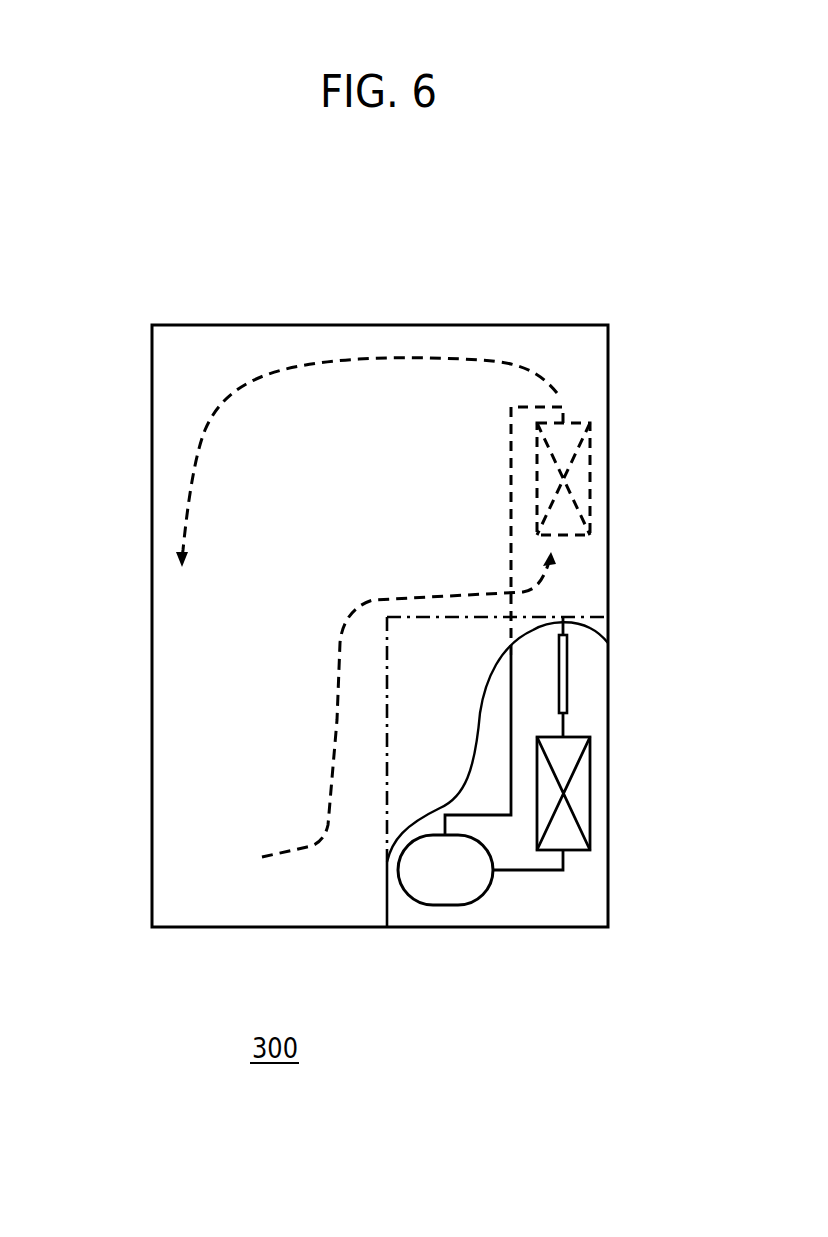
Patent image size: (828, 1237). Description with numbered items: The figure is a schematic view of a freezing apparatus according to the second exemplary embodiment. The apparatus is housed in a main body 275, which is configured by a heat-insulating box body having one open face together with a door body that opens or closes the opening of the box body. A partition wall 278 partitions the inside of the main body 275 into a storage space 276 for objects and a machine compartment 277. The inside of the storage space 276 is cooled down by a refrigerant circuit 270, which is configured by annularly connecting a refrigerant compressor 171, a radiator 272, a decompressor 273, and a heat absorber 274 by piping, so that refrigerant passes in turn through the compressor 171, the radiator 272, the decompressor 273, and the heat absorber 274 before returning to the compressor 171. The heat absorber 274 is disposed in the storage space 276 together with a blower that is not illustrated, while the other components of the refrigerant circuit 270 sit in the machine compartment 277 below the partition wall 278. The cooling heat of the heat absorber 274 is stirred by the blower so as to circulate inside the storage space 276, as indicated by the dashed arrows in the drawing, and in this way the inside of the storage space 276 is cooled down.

The refrigerant compressor 171 is at (440, 907).
The refrigerant circuit 270 is at (593, 710).
The radiator 272 is at (592, 823).
The decompressor 273 is at (567, 680).
The heat absorber 274 is at (590, 457).
The main body 275 is at (198, 325).
The storage space 276 is at (232, 640).
The machine compartment 277 is at (545, 905).
The partition wall 278 is at (387, 803).